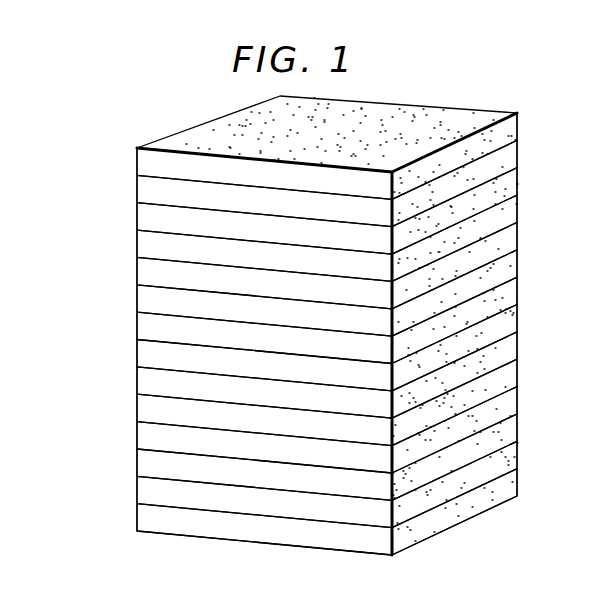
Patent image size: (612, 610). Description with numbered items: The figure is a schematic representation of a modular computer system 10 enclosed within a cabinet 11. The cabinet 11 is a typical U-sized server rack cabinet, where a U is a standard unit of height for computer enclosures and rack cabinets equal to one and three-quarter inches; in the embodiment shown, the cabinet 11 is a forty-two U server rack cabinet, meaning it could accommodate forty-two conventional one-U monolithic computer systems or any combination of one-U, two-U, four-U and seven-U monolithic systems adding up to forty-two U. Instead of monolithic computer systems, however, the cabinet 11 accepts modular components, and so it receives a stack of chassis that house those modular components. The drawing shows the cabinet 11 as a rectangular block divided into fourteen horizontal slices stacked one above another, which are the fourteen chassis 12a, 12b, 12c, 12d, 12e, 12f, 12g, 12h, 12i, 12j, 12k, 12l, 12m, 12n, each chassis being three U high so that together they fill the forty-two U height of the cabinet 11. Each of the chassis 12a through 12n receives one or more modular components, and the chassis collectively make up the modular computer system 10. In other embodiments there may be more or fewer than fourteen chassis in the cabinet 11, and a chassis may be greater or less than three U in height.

The modular computer system 10 is at (122, 60).
The cabinet 11 is at (429, 114).
The chassis 12a is at (143, 158).
The chassis 12b is at (143, 186).
The chassis 12c is at (143, 213).
The chassis 12d is at (143, 241).
The chassis 12e is at (143, 268).
The chassis 12f is at (143, 296).
The chassis 12g is at (143, 329).
The chassis 12h is at (143, 356).
The chassis 12i is at (143, 383).
The chassis 12j is at (143, 411).
The chassis 12k is at (143, 438).
The chassis 12l is at (143, 465).
The chassis 12m is at (143, 493).
The chassis 12n is at (143, 520).